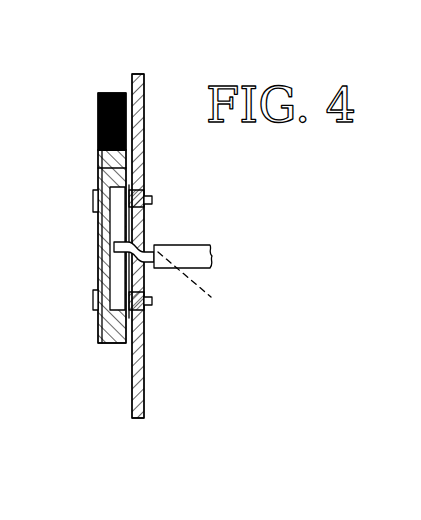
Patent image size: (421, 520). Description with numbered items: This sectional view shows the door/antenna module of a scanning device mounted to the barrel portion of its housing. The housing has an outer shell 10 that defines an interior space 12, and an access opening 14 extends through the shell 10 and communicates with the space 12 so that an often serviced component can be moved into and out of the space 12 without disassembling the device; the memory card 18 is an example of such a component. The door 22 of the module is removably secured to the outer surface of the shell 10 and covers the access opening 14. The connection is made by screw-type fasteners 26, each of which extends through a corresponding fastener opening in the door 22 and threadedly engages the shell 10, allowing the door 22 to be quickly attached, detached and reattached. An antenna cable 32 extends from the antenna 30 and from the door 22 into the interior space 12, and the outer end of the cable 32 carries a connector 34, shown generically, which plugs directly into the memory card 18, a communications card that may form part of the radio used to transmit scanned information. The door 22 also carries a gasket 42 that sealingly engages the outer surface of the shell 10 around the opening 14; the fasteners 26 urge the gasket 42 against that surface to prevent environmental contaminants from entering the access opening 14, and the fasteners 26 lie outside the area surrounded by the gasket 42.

The outer shell 10 is at (145, 92).
The interior space 12 is at (160, 346).
The access opening 14 is at (141, 227).
The memory card 18 is at (213, 250).
The door 22 is at (83, 291).
The screw-type fastener 26 is at (150, 196).
The antenna 30 is at (99, 99).
The antenna cable 32 is at (152, 244).
The connector 34 is at (199, 287).
The gasket 42 is at (99, 180).